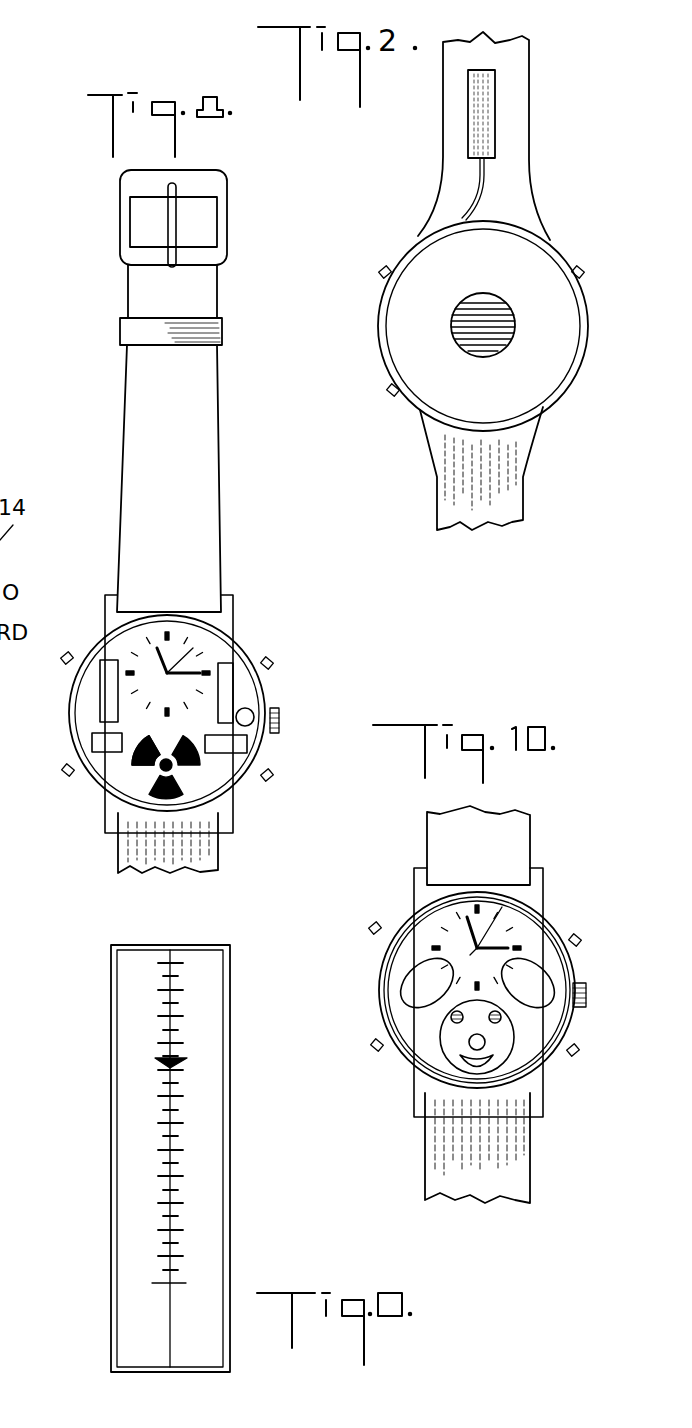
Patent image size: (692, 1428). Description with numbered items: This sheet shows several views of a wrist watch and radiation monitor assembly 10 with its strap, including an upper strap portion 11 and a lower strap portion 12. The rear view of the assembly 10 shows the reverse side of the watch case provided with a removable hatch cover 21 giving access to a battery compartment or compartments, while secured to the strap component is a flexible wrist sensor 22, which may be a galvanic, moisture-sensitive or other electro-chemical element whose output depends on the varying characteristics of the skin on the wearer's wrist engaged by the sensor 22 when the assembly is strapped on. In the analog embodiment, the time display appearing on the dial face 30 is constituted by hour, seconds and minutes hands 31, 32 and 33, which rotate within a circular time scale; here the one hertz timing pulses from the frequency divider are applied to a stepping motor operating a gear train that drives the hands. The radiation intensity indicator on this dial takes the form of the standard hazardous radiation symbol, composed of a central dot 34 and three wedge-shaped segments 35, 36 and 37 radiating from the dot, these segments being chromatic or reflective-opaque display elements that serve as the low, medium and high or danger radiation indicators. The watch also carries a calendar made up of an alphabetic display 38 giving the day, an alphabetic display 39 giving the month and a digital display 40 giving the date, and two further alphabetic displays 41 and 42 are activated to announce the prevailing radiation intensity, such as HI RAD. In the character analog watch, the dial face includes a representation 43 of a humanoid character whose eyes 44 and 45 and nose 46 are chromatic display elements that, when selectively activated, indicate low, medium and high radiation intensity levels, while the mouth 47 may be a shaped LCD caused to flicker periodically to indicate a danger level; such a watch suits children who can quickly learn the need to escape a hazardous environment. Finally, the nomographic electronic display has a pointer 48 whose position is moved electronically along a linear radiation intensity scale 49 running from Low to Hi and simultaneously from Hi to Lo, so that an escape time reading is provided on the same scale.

In FIG. 2, the wristwatch 10 is at (563, 397).
In FIG. 2, the upper strap portion 11 is at (447, 157).
In FIG. 2, the lower strap portion 12 is at (450, 496).
In FIG. 2, the removable hatch cover 21 is at (455, 332).
In FIG. 2, the flexible wrist sensor 22 is at (492, 126).
In FIG. 8, the dial face 30 is at (220, 773).
In FIG. 8, the hour hand 31 is at (157, 648).
In FIG. 8, the seconds hand 32 is at (193, 648).
In FIG. 8, the minutes hand 33 is at (200, 668).
In FIG. 8, the central dot 34 is at (163, 767).
In FIG. 8, the wedge-shaped segment 35 is at (133, 767).
In FIG. 8, the wedge-shaped segment 36 is at (232, 788).
In FIG. 8, the wedge-shaped segment 37 is at (166, 771).
In FIG. 8, the alphabetic day display 38 is at (100, 697).
In FIG. 8, the alphabetic month display 39 is at (230, 668).
In FIG. 8, the digital date display 40 is at (248, 708).
In FIG. 8, the alphabetic radiation display 41 is at (92, 740).
In FIG. 8, the alphabetic radiation display 42 is at (247, 742).
In FIG. 10, the humanoid character representation 43 is at (512, 1012).
In FIG. 10, the eye 44 is at (450, 1017).
In FIG. 10, the eye 45 is at (505, 1022).
In FIG. 10, the nose 46 is at (470, 1040).
In FIG. 10, the mouth 47 is at (483, 1063).
In FIG. 9, the pointer 48 is at (188, 1062).
In FIG. 9, the linear radiation intensity scale 49 is at (162, 1145).